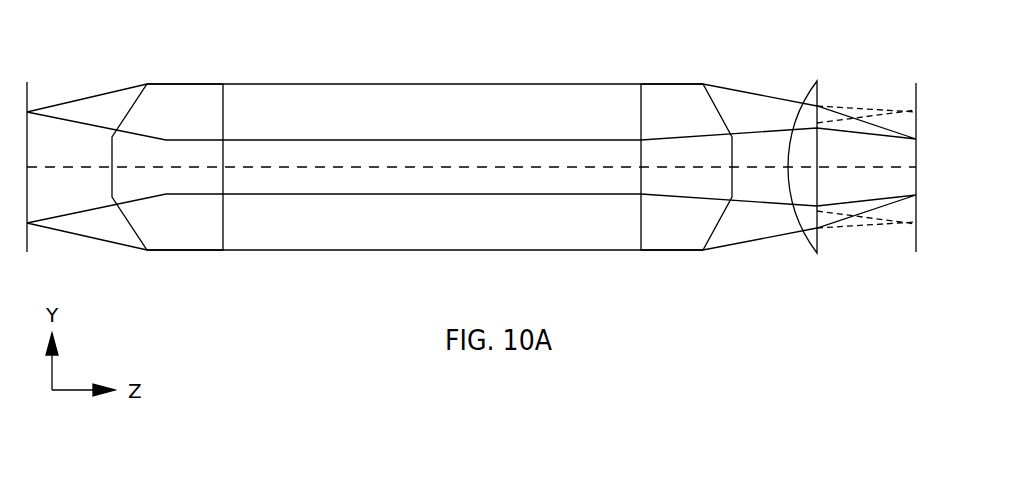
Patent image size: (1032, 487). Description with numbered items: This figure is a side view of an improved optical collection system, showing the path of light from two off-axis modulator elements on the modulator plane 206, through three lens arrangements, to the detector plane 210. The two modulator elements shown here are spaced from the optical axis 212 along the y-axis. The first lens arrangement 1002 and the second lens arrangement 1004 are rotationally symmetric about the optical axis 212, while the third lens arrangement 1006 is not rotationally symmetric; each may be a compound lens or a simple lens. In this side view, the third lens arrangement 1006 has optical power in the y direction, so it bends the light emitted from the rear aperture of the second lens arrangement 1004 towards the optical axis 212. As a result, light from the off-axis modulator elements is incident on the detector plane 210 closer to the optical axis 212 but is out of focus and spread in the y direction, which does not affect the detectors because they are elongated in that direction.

The modulator plane 206 is at (35, 94).
The first lens arrangement 1002 is at (173, 83).
The second lens arrangement 1004 is at (668, 82).
The third lens arrangement 1006 is at (815, 83).
The detector plane 210 is at (907, 93).
The optical axis 212 is at (303, 168).